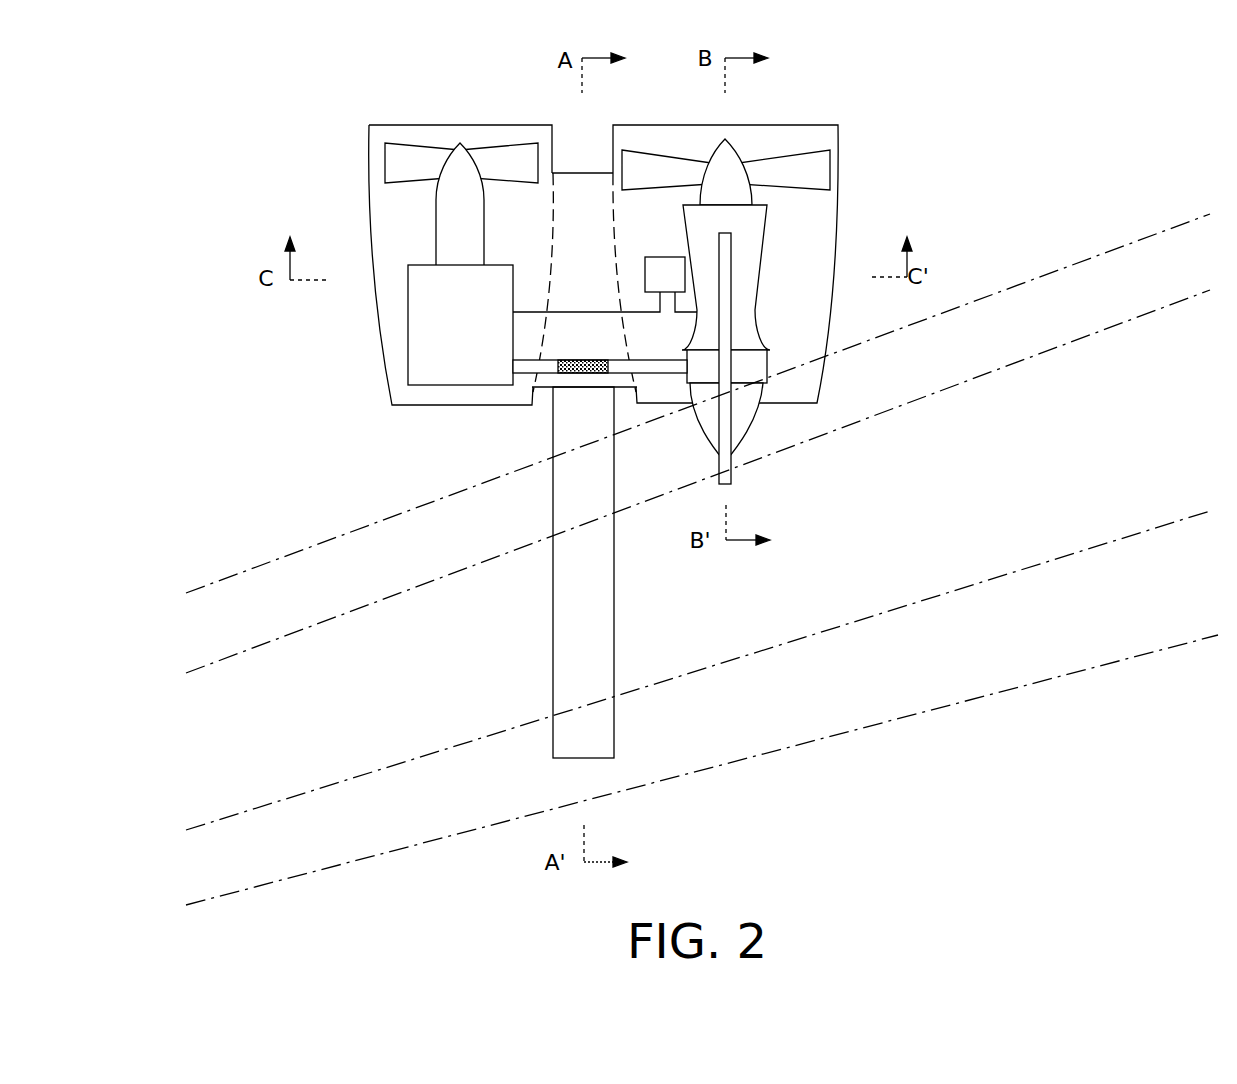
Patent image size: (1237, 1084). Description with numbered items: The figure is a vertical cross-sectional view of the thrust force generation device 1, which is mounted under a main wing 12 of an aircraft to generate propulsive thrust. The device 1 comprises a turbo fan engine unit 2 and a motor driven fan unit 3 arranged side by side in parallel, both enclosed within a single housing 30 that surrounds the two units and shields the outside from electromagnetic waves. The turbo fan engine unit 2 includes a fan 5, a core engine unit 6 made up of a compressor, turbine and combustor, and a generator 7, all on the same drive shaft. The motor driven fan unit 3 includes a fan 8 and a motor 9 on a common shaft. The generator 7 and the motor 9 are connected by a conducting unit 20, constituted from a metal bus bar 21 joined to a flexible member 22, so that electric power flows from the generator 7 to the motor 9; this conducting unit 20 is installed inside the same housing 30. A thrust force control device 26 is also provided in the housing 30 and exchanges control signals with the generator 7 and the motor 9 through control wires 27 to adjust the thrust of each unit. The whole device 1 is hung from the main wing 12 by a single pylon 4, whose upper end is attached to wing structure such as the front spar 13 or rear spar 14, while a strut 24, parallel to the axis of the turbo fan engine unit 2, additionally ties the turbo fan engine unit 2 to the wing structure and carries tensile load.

The thrust force generation device 1 is at (908, 108).
The turbo fan engine unit 2 is at (827, 233).
The motor driven fan unit 3 is at (384, 224).
The pylon 4 is at (605, 613).
The fan 5 is at (781, 160).
The core engine unit 6 is at (766, 248).
The generator 7 is at (758, 368).
The fan 8 is at (503, 158).
The motor 9 is at (423, 335).
The main wing 12 is at (935, 725).
The front spar 13 is at (980, 380).
The rear spar 14 is at (1035, 575).
The conducting unit 20 is at (515, 345).
The bus bar 21 is at (527, 373).
The flexible member 22 is at (579, 373).
The strut 24 is at (732, 283).
The thrust force control device 26 is at (665, 255).
The control wires 27 is at (532, 307).
The housing 30 is at (839, 170).